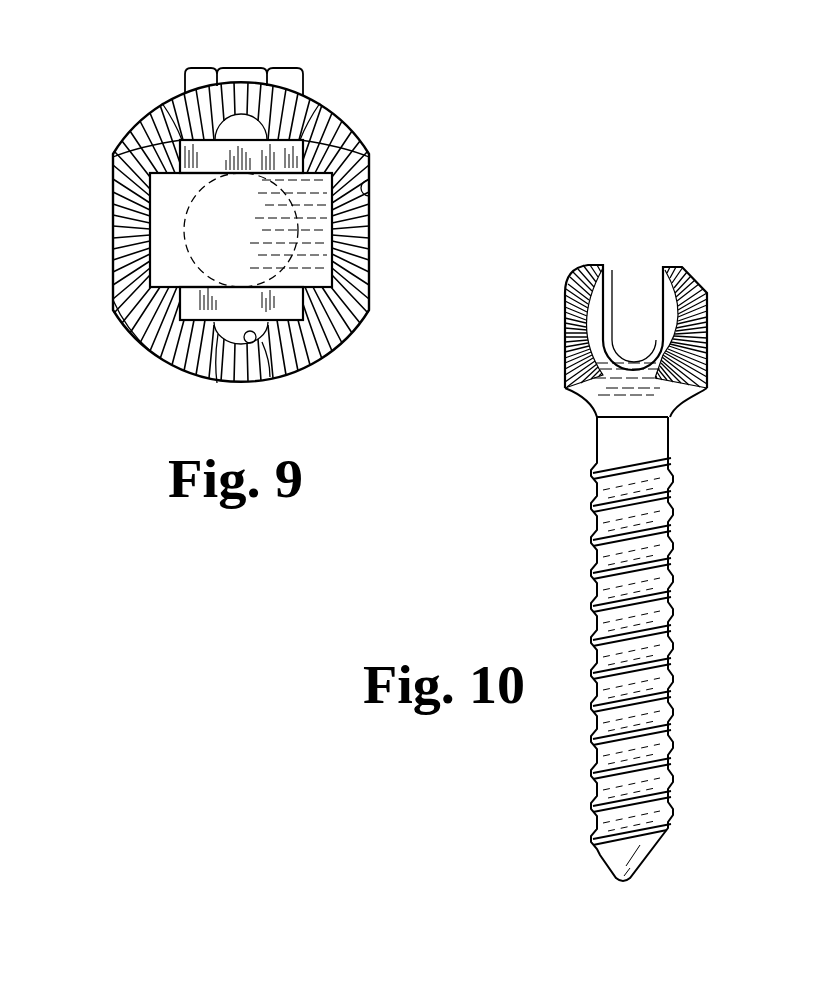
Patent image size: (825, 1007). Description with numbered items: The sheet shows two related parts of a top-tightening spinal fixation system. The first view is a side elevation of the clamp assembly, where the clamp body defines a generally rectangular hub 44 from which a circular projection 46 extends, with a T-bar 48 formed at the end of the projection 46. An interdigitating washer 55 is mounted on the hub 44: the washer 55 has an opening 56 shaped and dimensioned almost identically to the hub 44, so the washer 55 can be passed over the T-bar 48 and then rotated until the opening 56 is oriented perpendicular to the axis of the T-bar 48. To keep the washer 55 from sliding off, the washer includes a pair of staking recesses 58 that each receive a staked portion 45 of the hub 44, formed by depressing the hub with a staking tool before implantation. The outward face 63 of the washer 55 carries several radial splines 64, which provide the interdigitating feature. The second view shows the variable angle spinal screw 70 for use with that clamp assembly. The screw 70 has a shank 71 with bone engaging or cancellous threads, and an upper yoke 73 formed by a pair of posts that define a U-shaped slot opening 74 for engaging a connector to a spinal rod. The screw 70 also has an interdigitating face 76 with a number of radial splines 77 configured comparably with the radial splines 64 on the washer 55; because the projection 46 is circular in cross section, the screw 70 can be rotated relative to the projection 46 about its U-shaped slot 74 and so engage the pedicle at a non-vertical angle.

In FIG. 9, the hub 44 is at (300, 148).
In FIG. 9, the staked portion 45 is at (162, 103).
In FIG. 9, the circular projection 46 is at (150, 215).
In FIG. 9, the T-bar 48 is at (113, 310).
In FIG. 9, the interdigitating washer 55 is at (342, 102).
In FIG. 9, the opening 56 is at (113, 165).
In FIG. 9, the staking recess 58 is at (320, 106).
In FIG. 9, the outward face 63 is at (369, 313).
In FIG. 9, the radial splines 64 is at (370, 147).
In FIG. 10, the variable angle spinal screw 70 is at (705, 404).
In FIG. 10, the shank 71 is at (668, 573).
In FIG. 10, the upper yoke 73 is at (708, 315).
In FIG. 10, the U-shaped slot opening 74 is at (663, 290).
In FIG. 10, the interdigitating face 76 is at (565, 392).
In FIG. 10, the radial splines 77 is at (682, 270).